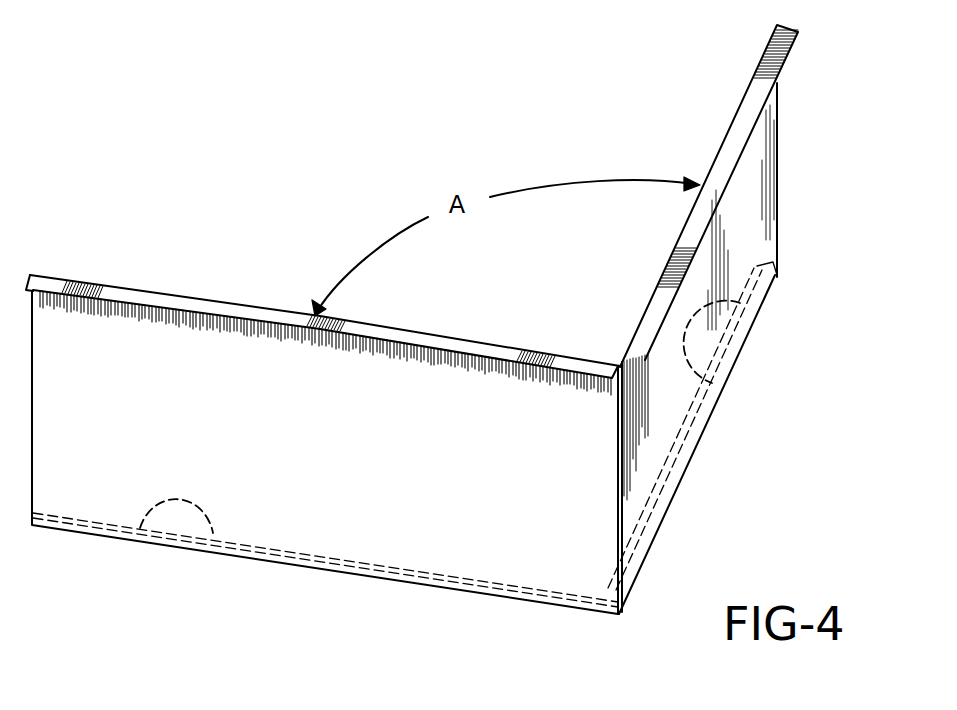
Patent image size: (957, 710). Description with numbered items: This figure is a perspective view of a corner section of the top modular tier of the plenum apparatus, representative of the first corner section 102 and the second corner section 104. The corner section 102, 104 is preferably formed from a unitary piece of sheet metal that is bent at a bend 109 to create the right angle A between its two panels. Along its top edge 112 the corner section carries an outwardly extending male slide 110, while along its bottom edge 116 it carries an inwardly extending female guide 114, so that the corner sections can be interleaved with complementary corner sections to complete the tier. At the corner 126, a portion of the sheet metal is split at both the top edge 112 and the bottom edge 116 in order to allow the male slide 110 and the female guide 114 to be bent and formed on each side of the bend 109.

The first corner section 102 is at (401, 386).
The second corner section 104 is at (593, 533).
The bend 109 is at (618, 408).
The male slide 110 is at (780, 78).
The top edge 112 is at (735, 112).
The female guide 114 is at (140, 527).
The bottom edge 116 is at (457, 590).
The corner 126 is at (627, 394).